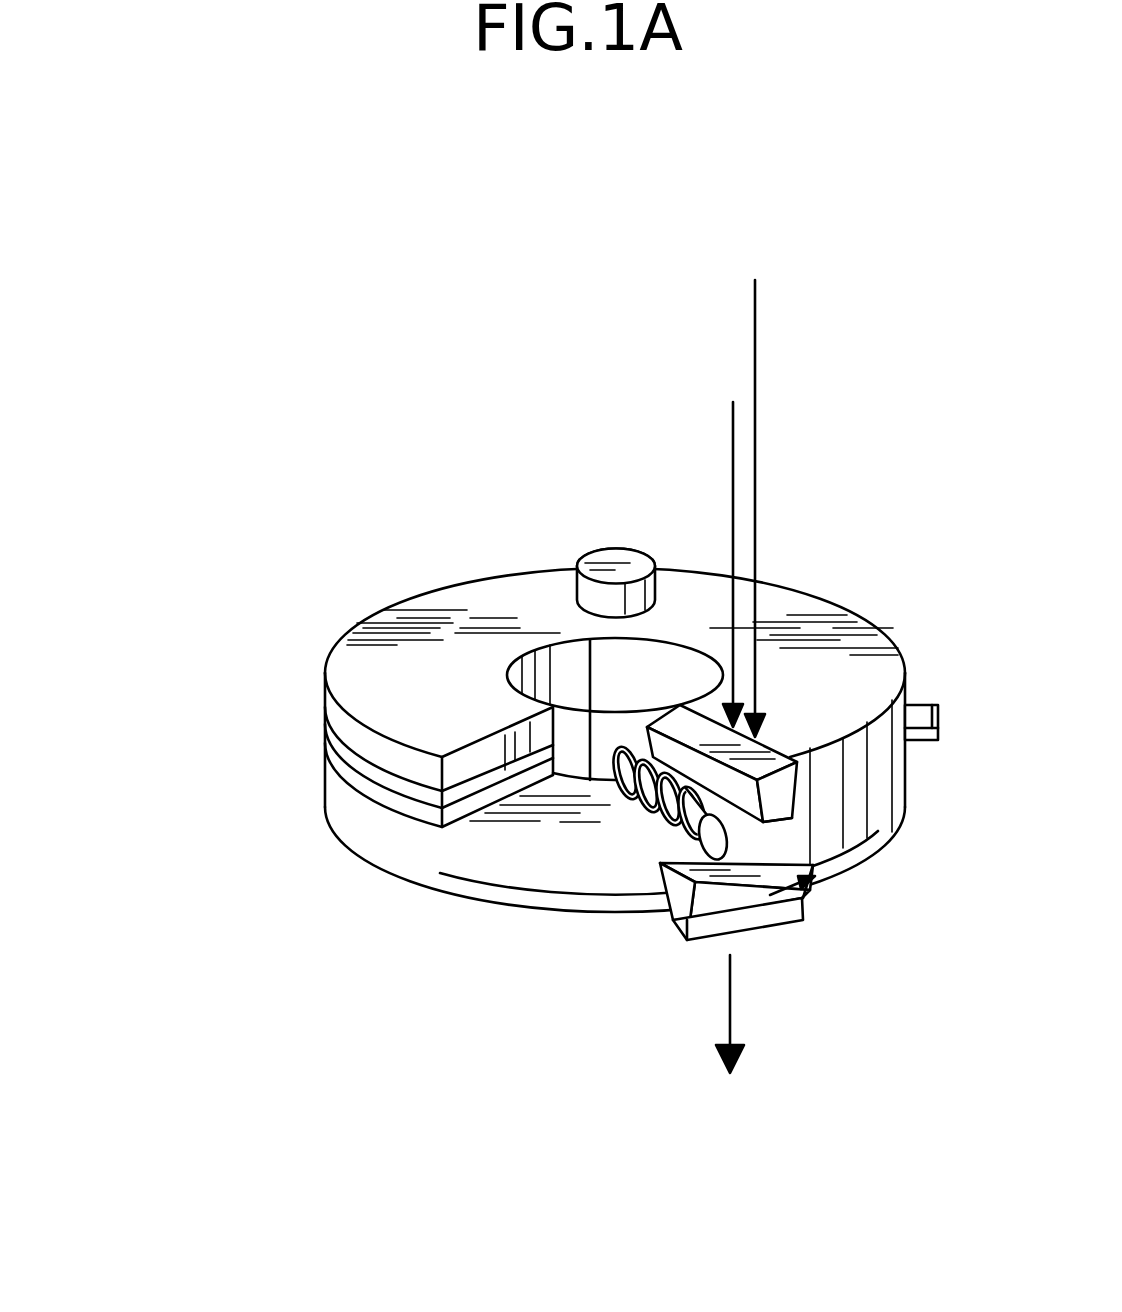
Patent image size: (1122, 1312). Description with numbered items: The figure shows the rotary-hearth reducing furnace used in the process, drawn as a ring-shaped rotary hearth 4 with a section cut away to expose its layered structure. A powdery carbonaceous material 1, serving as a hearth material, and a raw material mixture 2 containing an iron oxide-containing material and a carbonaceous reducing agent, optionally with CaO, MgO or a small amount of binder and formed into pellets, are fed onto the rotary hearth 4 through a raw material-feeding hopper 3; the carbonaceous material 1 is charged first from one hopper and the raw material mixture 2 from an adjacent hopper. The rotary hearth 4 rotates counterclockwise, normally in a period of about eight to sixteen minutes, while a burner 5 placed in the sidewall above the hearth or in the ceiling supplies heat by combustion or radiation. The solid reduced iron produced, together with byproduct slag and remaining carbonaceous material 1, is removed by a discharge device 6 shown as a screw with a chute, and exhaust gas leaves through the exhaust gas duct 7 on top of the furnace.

The carbonaceous material 1 is at (733, 402).
The raw material mixture 2 is at (755, 280).
The raw material-feeding hopper 3 is at (770, 786).
The rotary hearth 4 is at (553, 823).
The burner 5 is at (923, 704).
The discharge device 6 is at (657, 840).
The exhaust gas duct 7 is at (612, 556).